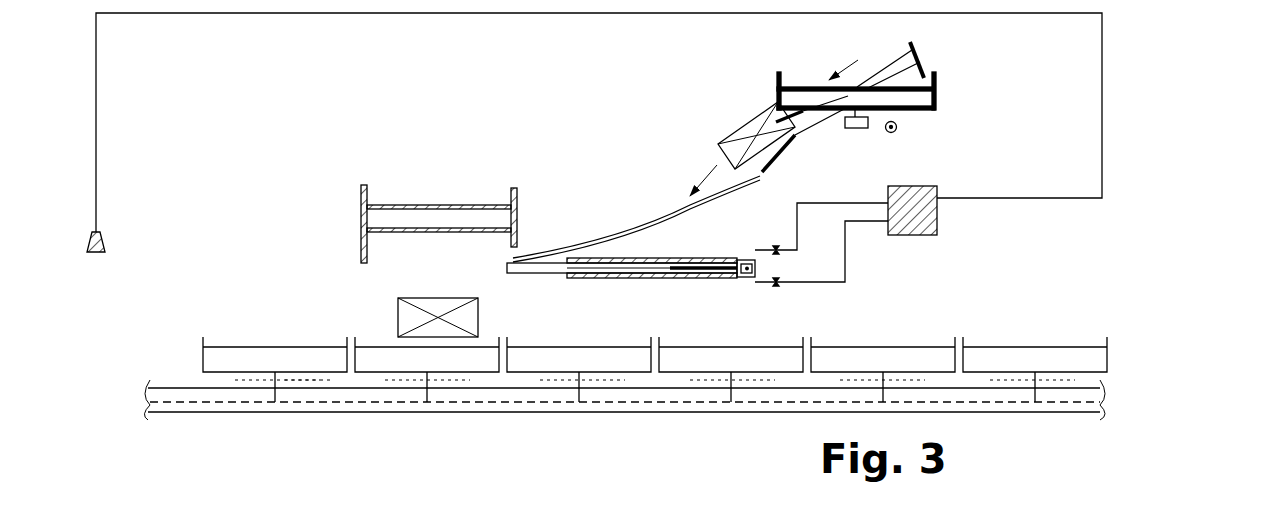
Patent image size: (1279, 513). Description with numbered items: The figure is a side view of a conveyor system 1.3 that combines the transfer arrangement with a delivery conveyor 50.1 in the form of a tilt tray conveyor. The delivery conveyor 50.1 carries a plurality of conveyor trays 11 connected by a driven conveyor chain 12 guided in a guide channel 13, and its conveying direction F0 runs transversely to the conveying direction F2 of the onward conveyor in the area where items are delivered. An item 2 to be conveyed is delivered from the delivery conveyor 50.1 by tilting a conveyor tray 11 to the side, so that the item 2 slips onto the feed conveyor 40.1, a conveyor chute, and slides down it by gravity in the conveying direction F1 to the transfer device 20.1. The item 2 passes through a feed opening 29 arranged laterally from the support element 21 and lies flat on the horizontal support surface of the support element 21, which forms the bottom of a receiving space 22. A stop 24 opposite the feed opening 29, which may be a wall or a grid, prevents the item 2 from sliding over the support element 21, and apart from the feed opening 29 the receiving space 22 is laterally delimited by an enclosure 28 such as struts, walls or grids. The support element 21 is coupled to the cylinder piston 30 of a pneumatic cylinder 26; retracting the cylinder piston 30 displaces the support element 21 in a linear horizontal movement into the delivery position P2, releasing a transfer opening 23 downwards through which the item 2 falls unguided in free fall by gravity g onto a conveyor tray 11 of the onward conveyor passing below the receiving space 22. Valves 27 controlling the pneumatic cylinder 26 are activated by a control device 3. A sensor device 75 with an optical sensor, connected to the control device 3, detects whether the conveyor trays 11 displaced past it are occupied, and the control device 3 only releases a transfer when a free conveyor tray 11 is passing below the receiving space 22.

The conveyor system 1.3 is at (245, 186).
The item to be conveyed 2 is at (750, 127).
The control device 3 is at (918, 216).
The conveyor tray 11 is at (827, 95).
The conveyor chain 12 is at (327, 410).
The guide channel 13 is at (513, 402).
The transfer device 20.1 is at (438, 221).
The support element 21 is at (585, 268).
The receiving space 22 is at (433, 248).
The transfer opening 23 is at (408, 265).
The stop 24 is at (364, 212).
The pneumatic cylinder 26 is at (740, 264).
The valves 27 is at (781, 254).
The enclosure 28 is at (392, 207).
The feed opening 29 is at (518, 200).
The cylinder piston 30 is at (693, 272).
The feed conveyor 40.1 is at (742, 178).
The delivery conveyor 50.1 is at (940, 72).
The sensor device 75 is at (108, 242).
The gravity g is at (262, 218).
The delivery position P2 is at (423, 273).
The conveying direction of the delivery conveyor F0 is at (897, 132).
The conveying direction F1 is at (623, 220).
The conveying direction of the onward conveyor F2 is at (1115, 365).